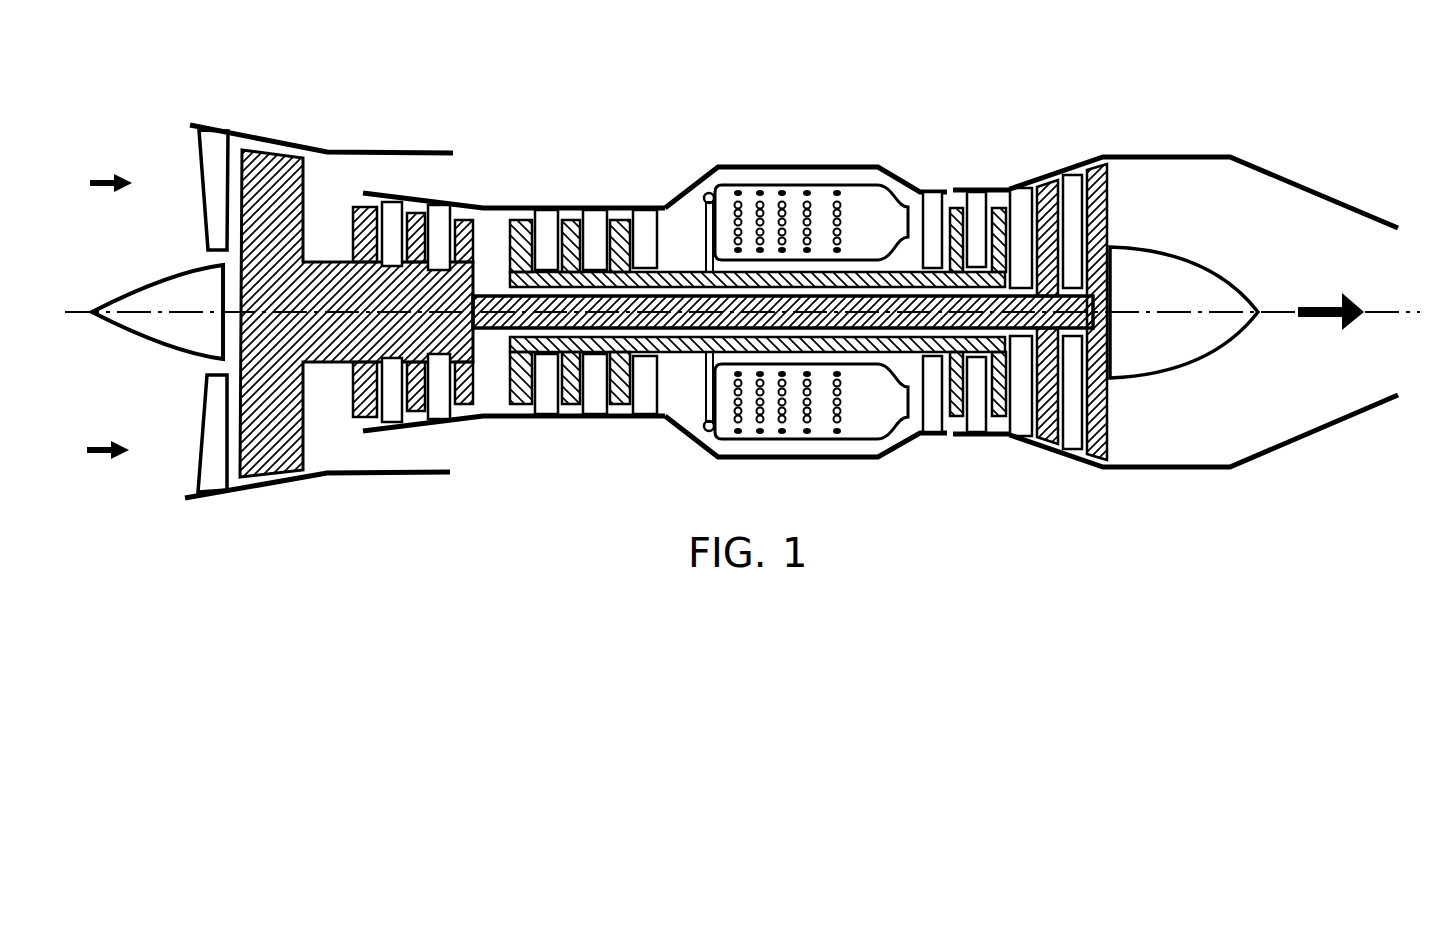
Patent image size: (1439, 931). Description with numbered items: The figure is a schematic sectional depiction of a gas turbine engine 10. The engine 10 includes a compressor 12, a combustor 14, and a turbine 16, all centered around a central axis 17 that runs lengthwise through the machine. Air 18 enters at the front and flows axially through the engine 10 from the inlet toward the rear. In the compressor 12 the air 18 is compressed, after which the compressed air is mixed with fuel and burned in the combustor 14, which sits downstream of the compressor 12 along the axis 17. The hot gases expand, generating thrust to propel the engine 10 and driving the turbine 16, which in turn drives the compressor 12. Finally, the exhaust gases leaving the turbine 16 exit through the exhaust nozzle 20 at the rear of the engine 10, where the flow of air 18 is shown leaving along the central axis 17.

The gas turbine engine 10 is at (784, 88).
The compressor 12 is at (512, 184).
The combustor 14 is at (809, 153).
The turbine 16 is at (1002, 165).
The central axis 17 is at (1420, 312).
The air 18 is at (108, 190).
The exhaust nozzle 20 is at (1234, 135).